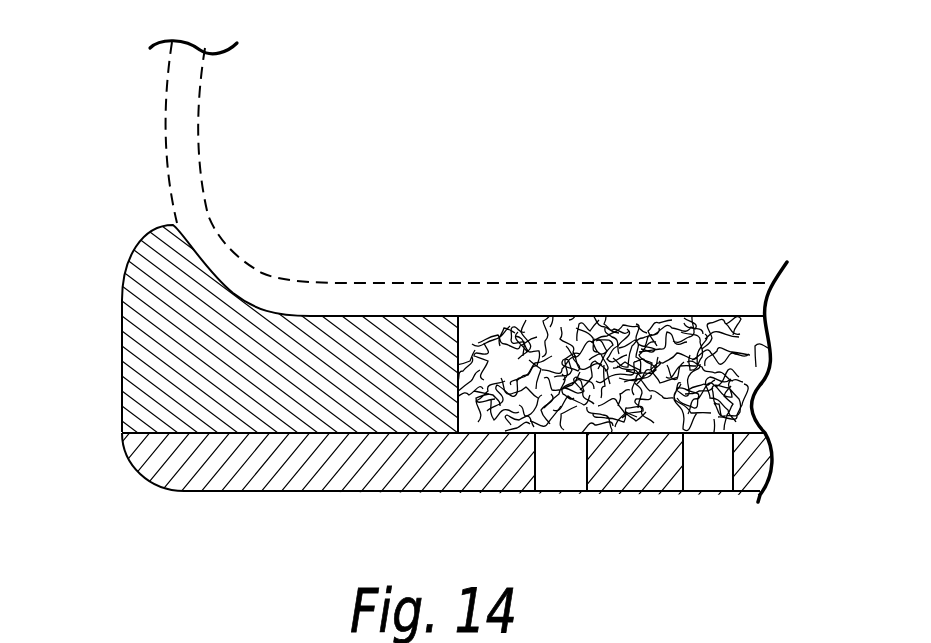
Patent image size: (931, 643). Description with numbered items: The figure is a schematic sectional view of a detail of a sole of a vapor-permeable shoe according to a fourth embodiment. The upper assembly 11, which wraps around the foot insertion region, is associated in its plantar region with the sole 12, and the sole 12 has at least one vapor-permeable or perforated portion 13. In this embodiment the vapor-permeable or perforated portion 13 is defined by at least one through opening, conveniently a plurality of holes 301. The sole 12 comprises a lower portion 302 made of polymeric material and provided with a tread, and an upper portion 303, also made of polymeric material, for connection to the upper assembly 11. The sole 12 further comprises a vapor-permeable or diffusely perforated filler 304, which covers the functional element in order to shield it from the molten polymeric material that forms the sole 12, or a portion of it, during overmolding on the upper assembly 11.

The upper assembly 11 is at (153, 140).
The sole 12 is at (110, 347).
The vapor-permeable or perforated portion 13 is at (753, 518).
The holes 301 is at (552, 458).
The lower portion 302 is at (206, 492).
The upper portion 303 is at (143, 398).
The vapor-permeable or diffusely perforated filler 304 is at (645, 343).